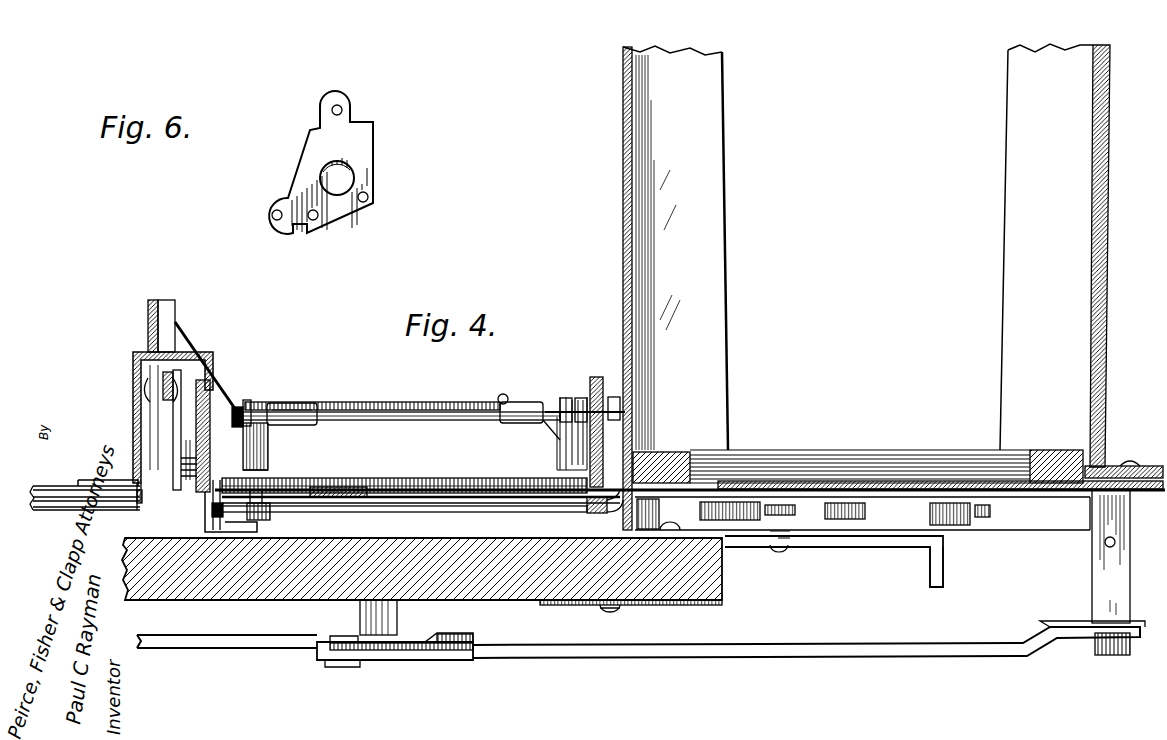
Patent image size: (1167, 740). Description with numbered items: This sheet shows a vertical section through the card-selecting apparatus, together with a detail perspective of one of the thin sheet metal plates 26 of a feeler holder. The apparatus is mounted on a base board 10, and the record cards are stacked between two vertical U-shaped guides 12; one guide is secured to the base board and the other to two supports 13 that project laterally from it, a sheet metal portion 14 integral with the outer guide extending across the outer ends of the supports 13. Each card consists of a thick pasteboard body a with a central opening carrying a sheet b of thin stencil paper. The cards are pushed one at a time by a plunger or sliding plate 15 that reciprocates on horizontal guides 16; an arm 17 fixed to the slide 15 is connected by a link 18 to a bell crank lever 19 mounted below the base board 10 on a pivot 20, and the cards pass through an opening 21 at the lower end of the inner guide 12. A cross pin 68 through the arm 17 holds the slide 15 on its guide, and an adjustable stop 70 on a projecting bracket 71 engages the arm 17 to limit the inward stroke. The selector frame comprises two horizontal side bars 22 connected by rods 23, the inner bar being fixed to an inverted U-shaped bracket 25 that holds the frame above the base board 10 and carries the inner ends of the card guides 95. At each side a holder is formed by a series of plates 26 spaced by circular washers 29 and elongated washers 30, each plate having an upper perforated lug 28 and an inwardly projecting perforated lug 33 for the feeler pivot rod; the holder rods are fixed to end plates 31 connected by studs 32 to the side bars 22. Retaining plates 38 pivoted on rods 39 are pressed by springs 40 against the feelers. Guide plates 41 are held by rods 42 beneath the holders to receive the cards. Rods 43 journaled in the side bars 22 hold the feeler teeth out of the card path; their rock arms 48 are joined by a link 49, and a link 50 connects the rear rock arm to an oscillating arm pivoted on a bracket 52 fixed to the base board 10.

In FIG. 4, the base board 10 is at (282, 585).
In FIG. 4, the vertical U-shaped guides 12 is at (622, 193).
In FIG. 4, the supports 13 is at (968, 513).
In FIG. 4, the sheet metal portion 14 is at (1110, 465).
In FIG. 4, the plunger or sliding plate 15 is at (1013, 490).
In FIG. 4, the horizontal guides 16 is at (900, 495).
In FIG. 4, the arm 17 is at (1100, 588).
In FIG. 4, the link 18 is at (708, 655).
In FIG. 4, the bell crank lever 19 is at (252, 640).
In FIG. 4, the pivot 20 is at (397, 610).
In FIG. 4, the opening 21 is at (598, 512).
In FIG. 4, the horizontal plates or bars 22 is at (203, 378).
In FIG. 4, the rods 23 is at (612, 397).
In FIG. 4, the part or bracket 25 is at (133, 357).
In FIG. 6, the thin sheet metal plates 26 is at (362, 152).
In FIG. 4, the thin sheet metal plates 26 is at (355, 402).
In FIG. 6, the perforated lugs 28 is at (338, 106).
In FIG. 4, the circular washers 29 is at (276, 404).
In FIG. 4, the elongated washers 30 is at (248, 478).
In FIG. 4, the plates 31 is at (250, 405).
In FIG. 4, the studs 32 is at (243, 405).
In FIG. 6, the inwardly projecting perforated lug 33 is at (263, 213).
In FIG. 4, the sheet metal plates 38 is at (419, 449).
In FIG. 4, the rods 39 is at (382, 412).
In FIG. 4, the springs 40 is at (525, 423).
In FIG. 4, the guide plates 41 is at (485, 508).
In FIG. 4, the rods 42 is at (318, 505).
In FIG. 4, the rods 43 is at (182, 480).
In FIG. 4, the rock arms 48 is at (175, 434).
In FIG. 4, the link 49 is at (162, 386).
In FIG. 4, the link 50 is at (172, 318).
In FIG. 4, the bracket 52 is at (204, 522).
In FIG. 4, the cross pin 68 is at (1105, 543).
In FIG. 4, the adjustable stop 70 is at (945, 572).
In FIG. 4, the projecting bracket 71 is at (728, 578).
In FIG. 4, the guides 95 is at (75, 500).
In FIG. 4, the body of the card a is at (682, 465).
In FIG. 4, the sheet of thin stencil paper b is at (800, 478).